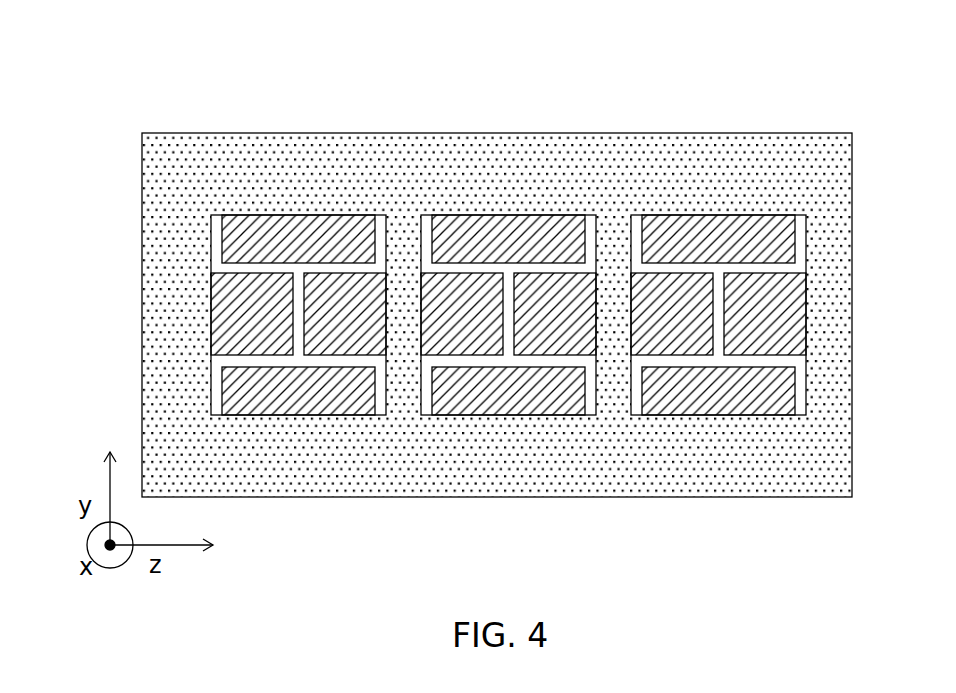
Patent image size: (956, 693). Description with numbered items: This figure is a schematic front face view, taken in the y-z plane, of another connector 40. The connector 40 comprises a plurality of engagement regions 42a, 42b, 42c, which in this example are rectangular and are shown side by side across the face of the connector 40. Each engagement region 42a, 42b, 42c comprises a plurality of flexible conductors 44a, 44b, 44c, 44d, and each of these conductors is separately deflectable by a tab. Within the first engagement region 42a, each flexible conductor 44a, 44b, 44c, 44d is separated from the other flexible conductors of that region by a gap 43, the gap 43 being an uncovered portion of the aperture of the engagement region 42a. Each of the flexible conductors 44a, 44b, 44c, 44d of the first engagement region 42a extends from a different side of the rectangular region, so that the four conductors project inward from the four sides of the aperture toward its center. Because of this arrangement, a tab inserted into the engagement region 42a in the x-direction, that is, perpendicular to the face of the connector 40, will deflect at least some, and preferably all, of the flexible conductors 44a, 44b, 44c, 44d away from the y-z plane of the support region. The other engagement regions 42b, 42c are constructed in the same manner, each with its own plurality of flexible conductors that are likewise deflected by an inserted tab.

The connector 40 is at (188, 119).
The first engagement region 42a is at (339, 314).
The engagement region 42b is at (532, 203).
The engagement region 42c is at (735, 205).
The gap 43 is at (382, 217).
The flexible conductor 44a is at (230, 345).
The flexible conductor 44b is at (290, 400).
The flexible conductor 44c is at (282, 242).
The flexible conductor 44d is at (360, 332).